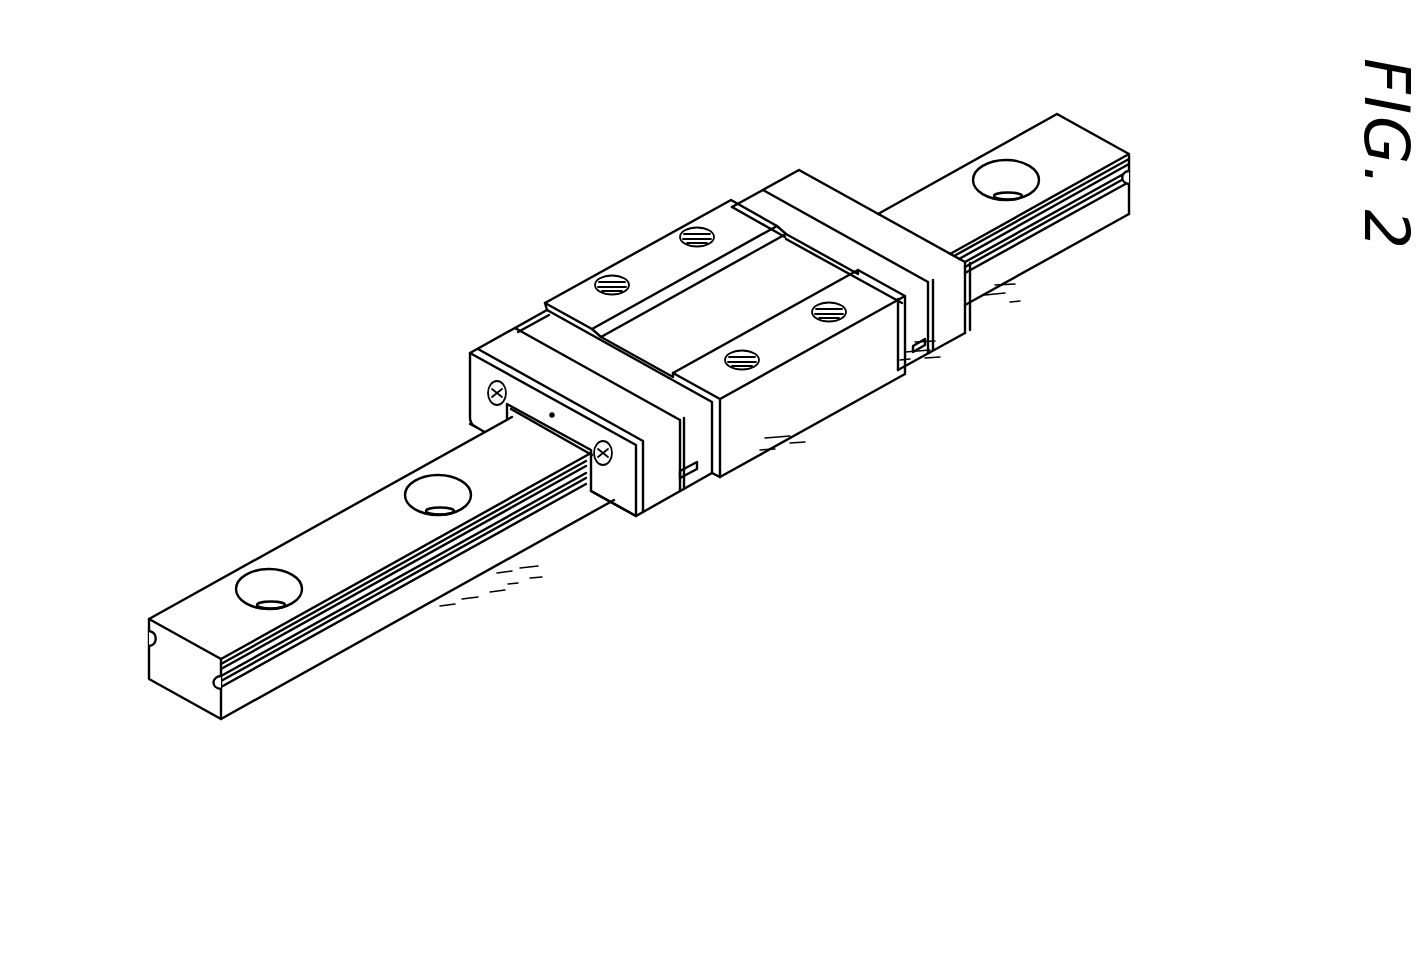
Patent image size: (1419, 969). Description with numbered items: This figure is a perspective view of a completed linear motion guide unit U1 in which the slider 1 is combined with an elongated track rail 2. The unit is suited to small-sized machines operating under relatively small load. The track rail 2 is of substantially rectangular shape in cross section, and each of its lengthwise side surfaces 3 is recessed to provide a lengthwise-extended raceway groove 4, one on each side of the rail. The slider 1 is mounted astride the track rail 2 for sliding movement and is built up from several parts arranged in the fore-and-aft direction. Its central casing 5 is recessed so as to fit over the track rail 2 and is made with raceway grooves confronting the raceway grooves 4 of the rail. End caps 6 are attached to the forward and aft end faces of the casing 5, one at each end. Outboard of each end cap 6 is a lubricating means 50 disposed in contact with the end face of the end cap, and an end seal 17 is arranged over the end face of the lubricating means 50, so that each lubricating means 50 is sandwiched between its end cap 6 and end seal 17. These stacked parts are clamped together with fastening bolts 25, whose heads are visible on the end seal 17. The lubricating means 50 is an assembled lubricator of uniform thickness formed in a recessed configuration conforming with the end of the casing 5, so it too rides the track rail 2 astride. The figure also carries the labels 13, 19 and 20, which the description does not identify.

The linear motion guide unit U1 is at (438, 330).
The slider 1 is at (826, 430).
The track rail 2 is at (620, 422).
The side surface 3 is at (147, 660).
The raceway groove 4 is at (150, 636).
The casing 5 is at (656, 258).
The end cap 6 is at (563, 335).
The rail mounting bolt hole 13 is at (428, 488).
The end seal 17 is at (478, 358).
The tapped mounting hole 19 is at (600, 278).
The slider assembly 20 is at (589, 583).
The fastening bolt 25 is at (487, 393).
The lubricating means 50 is at (680, 504).